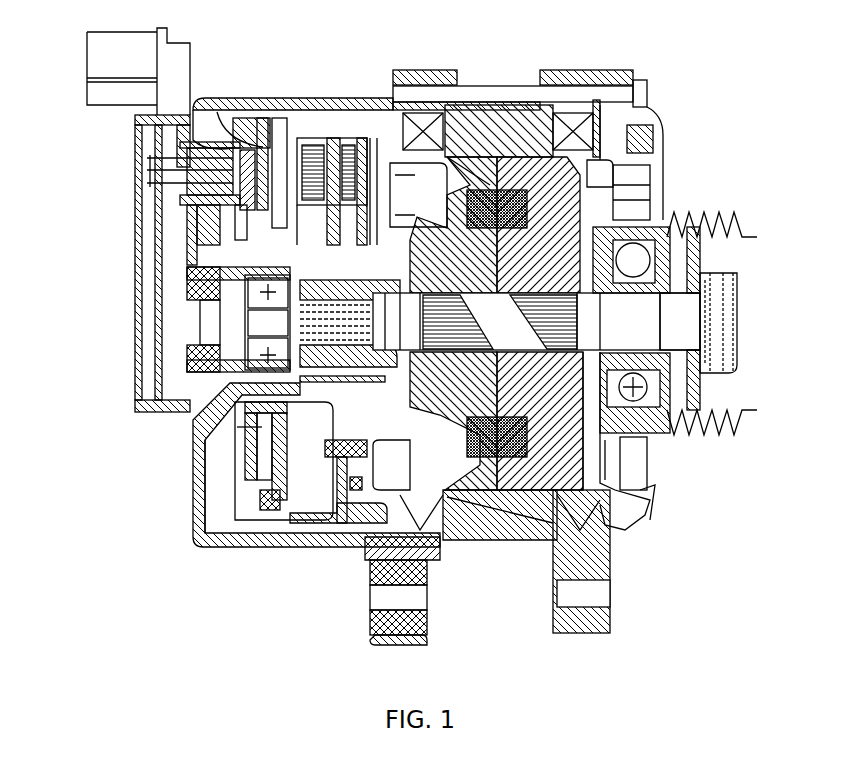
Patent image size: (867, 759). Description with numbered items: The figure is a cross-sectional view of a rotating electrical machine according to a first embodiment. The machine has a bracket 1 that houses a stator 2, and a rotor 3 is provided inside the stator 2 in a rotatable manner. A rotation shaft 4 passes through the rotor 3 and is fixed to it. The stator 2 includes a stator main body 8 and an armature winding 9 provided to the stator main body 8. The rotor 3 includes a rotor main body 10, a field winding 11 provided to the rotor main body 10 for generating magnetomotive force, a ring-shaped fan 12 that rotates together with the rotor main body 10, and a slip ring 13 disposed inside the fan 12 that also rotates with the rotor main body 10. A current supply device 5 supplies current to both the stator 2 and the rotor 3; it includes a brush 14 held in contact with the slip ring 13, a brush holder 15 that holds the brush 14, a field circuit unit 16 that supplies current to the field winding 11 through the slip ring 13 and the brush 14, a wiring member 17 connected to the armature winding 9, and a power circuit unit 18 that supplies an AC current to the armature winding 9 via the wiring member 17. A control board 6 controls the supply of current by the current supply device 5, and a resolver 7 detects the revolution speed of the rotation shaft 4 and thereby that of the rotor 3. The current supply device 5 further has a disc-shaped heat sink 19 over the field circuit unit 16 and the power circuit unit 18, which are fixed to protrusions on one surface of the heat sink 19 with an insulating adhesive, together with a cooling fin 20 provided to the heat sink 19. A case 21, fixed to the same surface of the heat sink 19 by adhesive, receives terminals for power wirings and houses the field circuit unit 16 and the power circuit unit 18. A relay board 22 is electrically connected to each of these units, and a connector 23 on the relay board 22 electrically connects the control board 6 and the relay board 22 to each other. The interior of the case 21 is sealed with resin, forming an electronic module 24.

The bracket 1 is at (430, 553).
The stator 2 is at (490, 533).
The rotor 3 is at (577, 185).
The rotation shaft 4 is at (657, 330).
The current supply device 5 is at (293, 143).
The control board 6 is at (157, 242).
The resolver 7 is at (197, 285).
The stator main body 8 is at (527, 540).
The armature winding 9 is at (617, 533).
The rotor main body 10 is at (540, 158).
The field winding 11 is at (497, 190).
The fan 12 is at (380, 228).
The slip ring 13 is at (377, 160).
The brush 14 is at (320, 217).
The brush holder 15 is at (333, 140).
The field circuit unit 16 is at (247, 145).
The wiring member 17 is at (325, 527).
The power circuit unit 18 is at (253, 490).
The heat sink 19 is at (283, 520).
The cooling fin 20 is at (303, 470).
The case 21 is at (262, 118).
The relay board 22 is at (243, 440).
The connector 23 is at (187, 181).
The electronic module 24 is at (205, 513).